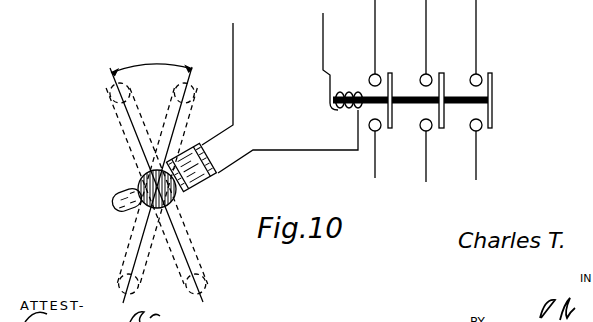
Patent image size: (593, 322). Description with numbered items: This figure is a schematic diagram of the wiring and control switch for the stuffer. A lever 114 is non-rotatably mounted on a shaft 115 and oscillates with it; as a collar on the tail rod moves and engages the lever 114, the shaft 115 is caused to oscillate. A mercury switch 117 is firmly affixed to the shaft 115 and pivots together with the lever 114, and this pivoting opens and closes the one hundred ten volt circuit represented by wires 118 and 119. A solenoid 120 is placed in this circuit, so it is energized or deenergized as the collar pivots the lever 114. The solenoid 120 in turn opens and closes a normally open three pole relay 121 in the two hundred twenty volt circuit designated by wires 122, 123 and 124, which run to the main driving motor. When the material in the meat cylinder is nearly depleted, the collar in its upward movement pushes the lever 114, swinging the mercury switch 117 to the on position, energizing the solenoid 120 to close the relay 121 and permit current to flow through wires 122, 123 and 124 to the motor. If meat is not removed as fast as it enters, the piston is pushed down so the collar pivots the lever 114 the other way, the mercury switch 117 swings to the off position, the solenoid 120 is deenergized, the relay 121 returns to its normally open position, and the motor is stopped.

The lever 114 is at (112, 103).
The shaft 115 is at (172, 196).
The mercury switch 117 is at (128, 198).
The wire 118 is at (233, 24).
The wire 119 is at (323, 20).
The solenoid 120 is at (336, 96).
The three pole relay 121 is at (498, 88).
The wire 122 is at (375, 8).
The wire 123 is at (427, 8).
The wire 124 is at (477, 8).